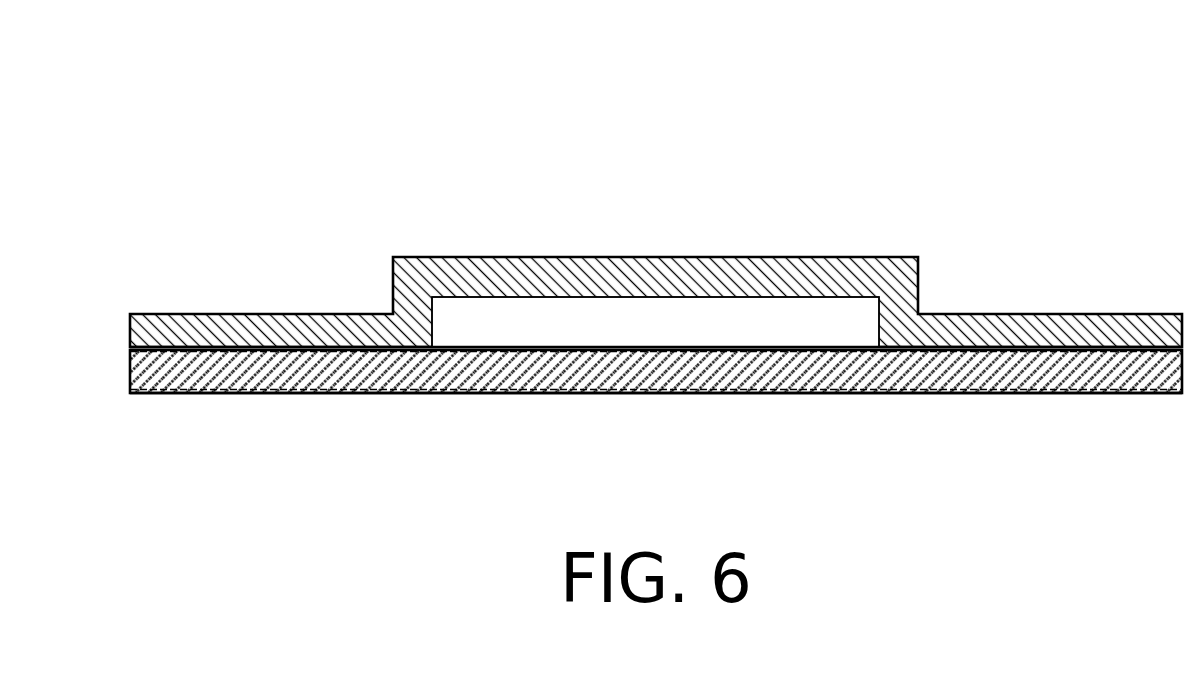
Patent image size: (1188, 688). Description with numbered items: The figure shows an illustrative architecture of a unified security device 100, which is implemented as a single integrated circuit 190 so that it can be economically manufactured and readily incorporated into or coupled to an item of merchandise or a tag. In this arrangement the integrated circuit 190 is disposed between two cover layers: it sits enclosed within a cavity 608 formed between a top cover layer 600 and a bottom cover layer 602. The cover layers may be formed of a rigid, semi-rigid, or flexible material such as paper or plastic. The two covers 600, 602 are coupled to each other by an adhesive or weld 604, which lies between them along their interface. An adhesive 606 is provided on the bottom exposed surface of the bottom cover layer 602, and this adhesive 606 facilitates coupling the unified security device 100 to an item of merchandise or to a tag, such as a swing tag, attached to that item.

The unified security device 100 is at (306, 100).
The integrated circuit 190 is at (765, 334).
The top cover layer 600 is at (430, 257).
The bottom cover layer 602 is at (410, 372).
The adhesive or weld 604 is at (233, 353).
The adhesive 606 is at (538, 395).
The cavity 608 is at (582, 297).